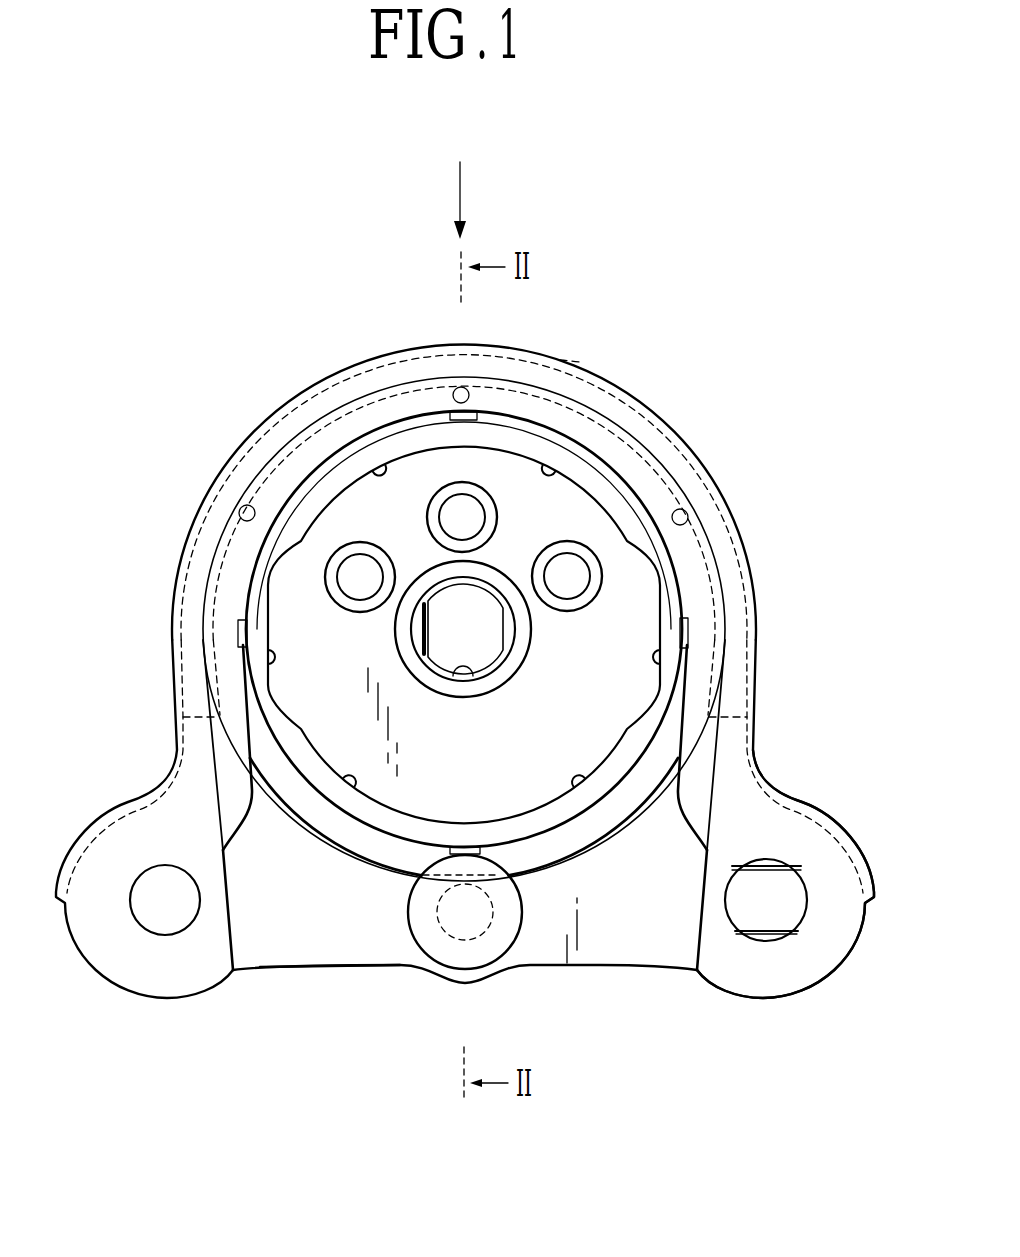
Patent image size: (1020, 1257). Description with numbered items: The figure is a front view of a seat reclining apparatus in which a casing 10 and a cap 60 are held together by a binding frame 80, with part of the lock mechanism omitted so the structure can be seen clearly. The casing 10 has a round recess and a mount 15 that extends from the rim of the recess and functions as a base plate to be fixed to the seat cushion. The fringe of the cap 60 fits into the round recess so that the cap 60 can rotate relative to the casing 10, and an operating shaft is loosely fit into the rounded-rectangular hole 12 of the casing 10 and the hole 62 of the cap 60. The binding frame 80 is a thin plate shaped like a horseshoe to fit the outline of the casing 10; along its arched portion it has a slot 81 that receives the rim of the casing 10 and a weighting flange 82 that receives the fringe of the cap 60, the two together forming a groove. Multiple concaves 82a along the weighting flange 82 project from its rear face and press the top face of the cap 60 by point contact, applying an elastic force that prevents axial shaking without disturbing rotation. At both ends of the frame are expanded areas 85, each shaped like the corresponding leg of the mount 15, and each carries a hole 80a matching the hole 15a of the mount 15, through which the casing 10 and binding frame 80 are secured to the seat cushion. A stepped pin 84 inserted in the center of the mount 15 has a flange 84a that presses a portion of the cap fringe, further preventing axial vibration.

The casing 10 is at (305, 948).
The hole 12 is at (486, 634).
The mount 15 is at (250, 960).
The hole 15a is at (165, 920).
The cap 60 is at (604, 836).
The hole 62 is at (468, 672).
The binding frame 80 is at (697, 433).
The hole 80a is at (800, 880).
The slot 81 is at (568, 390).
The weighting flange 82 is at (590, 437).
The concave 82a is at (454, 391).
The stepped pin 84 is at (411, 958).
The flange 84a is at (500, 935).
The expanded area 85 is at (790, 975).